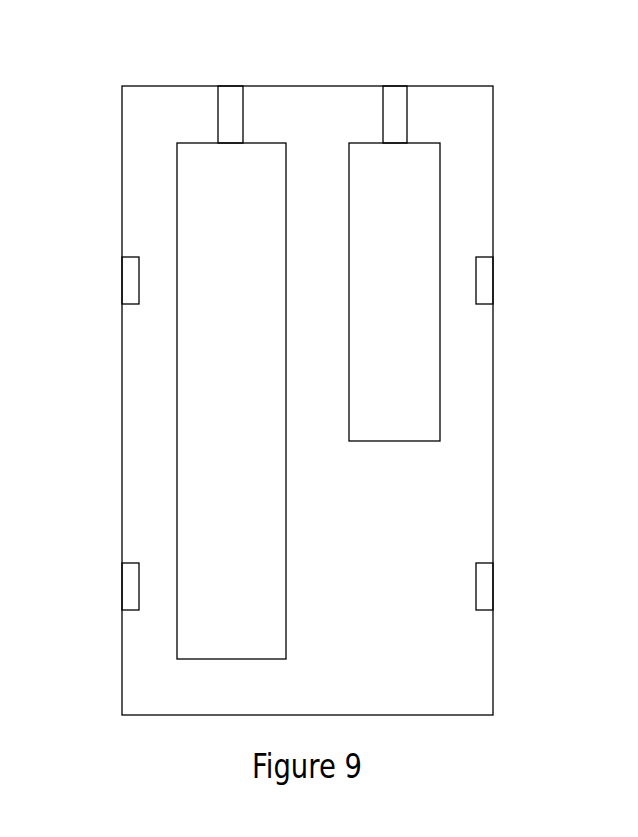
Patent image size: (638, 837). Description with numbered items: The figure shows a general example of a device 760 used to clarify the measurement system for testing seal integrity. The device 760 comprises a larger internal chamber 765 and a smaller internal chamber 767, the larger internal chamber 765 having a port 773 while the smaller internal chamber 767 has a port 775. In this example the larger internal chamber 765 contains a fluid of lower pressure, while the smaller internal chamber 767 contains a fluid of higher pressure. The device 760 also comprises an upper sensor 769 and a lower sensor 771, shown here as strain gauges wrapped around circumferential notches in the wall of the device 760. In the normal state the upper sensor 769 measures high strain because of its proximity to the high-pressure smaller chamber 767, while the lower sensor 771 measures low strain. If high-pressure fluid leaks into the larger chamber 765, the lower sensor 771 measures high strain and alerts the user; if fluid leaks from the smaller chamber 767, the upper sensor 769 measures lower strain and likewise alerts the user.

The device 760 is at (493, 113).
The larger internal chamber 765 is at (198, 638).
The smaller internal chamber 767 is at (424, 377).
The upper sensor 769 is at (131, 280).
The lower sensor 771 is at (131, 583).
The port 773 is at (230, 115).
The port 775 is at (407, 113).